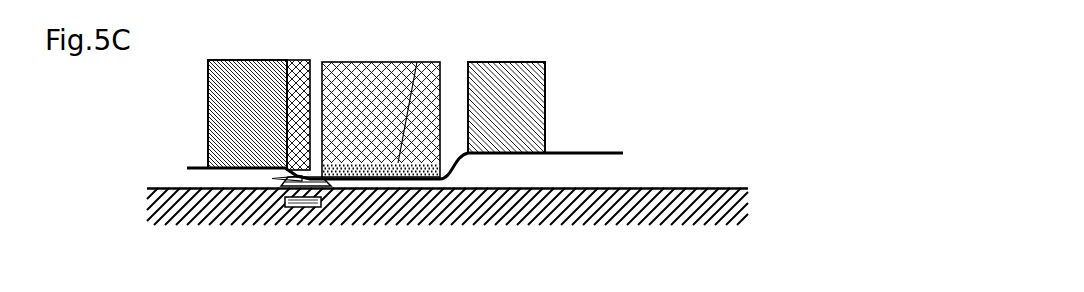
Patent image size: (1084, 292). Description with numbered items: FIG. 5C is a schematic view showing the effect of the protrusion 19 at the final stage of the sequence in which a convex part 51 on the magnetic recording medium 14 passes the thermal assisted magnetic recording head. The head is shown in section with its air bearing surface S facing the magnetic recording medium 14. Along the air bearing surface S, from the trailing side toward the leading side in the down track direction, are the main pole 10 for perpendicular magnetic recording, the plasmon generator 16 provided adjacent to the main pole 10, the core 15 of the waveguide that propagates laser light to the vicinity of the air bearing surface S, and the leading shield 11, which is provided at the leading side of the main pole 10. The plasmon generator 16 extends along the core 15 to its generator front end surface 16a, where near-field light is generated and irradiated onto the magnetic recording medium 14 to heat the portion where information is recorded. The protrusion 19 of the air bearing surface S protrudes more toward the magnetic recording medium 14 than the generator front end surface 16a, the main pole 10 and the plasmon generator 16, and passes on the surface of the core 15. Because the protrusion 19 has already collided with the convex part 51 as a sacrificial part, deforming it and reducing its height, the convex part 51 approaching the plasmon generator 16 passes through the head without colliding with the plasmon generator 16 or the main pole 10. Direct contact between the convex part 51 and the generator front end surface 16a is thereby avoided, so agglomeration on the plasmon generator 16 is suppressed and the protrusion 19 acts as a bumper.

The main pole 10 is at (248, 60).
The leading shield 11 is at (500, 62).
The magnetic recording medium 14 is at (733, 188).
The core 15 is at (372, 62).
The plasmon generator 16 is at (298, 60).
The generator front end surface 16a is at (290, 180).
The protrusion 19 is at (417, 62).
The convex part 51 is at (347, 188).
The air bearing surface S is at (188, 172).